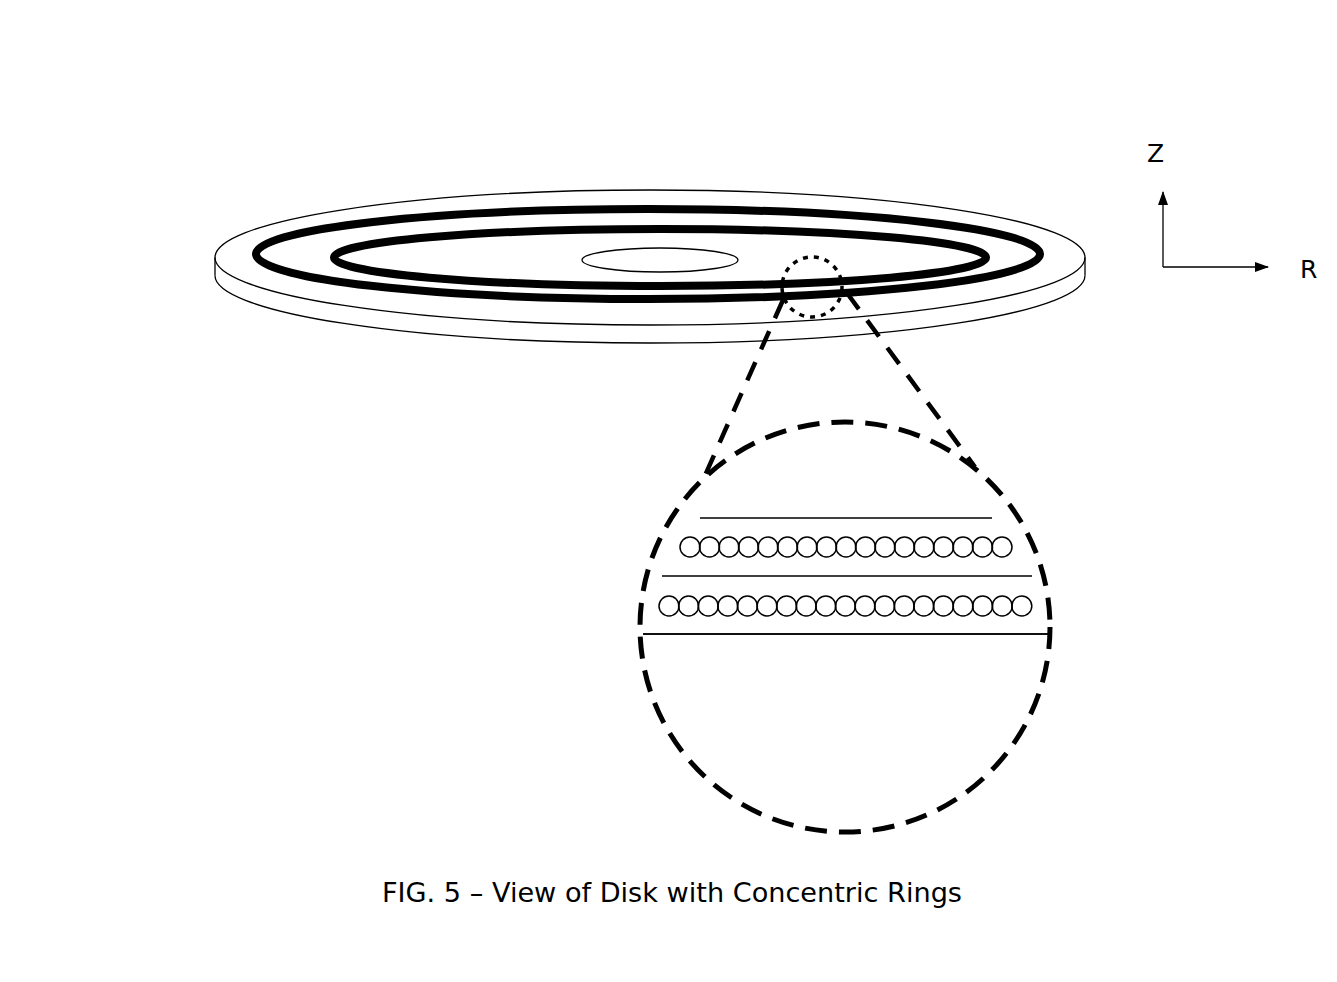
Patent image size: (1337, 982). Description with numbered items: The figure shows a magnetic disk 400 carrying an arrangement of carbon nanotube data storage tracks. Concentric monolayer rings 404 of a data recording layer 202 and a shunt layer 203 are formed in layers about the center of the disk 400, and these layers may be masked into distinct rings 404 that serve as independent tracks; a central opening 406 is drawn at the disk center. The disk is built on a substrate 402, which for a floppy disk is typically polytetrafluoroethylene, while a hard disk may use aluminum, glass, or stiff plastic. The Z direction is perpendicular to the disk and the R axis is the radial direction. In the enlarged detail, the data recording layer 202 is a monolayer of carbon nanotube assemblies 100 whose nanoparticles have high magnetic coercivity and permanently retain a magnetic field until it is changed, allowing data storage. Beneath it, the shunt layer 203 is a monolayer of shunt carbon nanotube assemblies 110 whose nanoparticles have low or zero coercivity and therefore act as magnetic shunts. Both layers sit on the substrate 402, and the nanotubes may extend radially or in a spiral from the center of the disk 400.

The magnetic disk 400 is at (259, 146).
The substrate 402 is at (402, 330).
The monolayer rings 404 is at (720, 206).
The central hole of disk 406 is at (658, 268).
The data recording layer 202 is at (755, 517).
The carbon nanotube assemblies 100 is at (677, 545).
The shunt carbon nanotube assemblies 110 is at (658, 602).
The shunt layer 203 is at (695, 638).